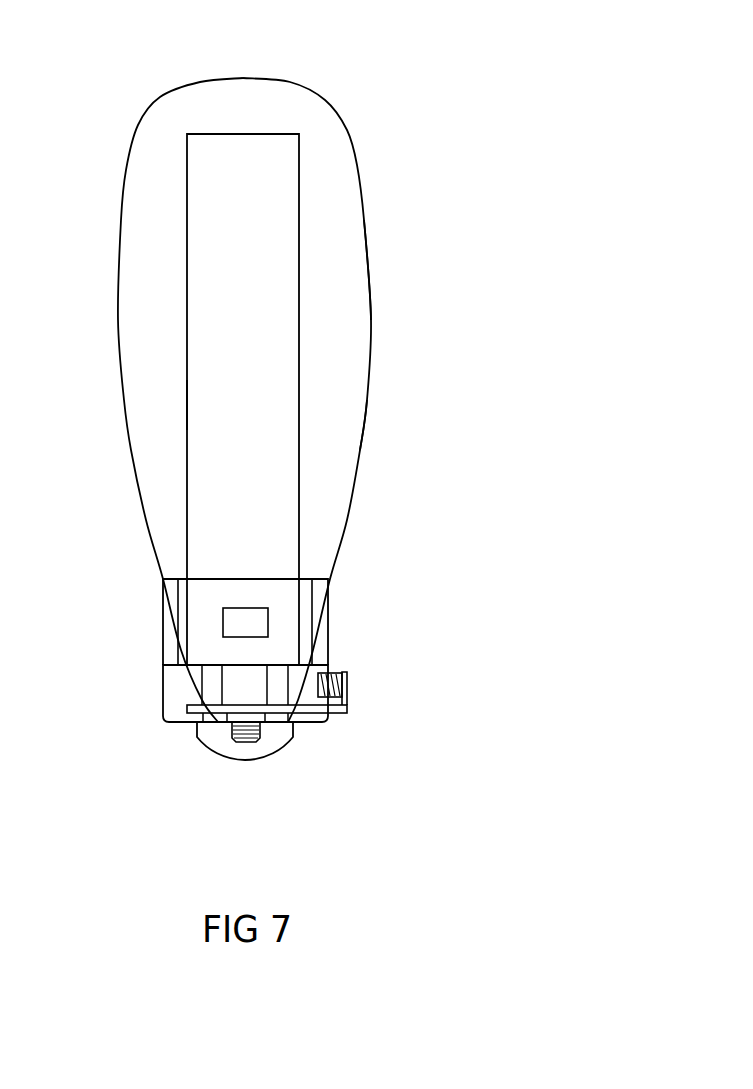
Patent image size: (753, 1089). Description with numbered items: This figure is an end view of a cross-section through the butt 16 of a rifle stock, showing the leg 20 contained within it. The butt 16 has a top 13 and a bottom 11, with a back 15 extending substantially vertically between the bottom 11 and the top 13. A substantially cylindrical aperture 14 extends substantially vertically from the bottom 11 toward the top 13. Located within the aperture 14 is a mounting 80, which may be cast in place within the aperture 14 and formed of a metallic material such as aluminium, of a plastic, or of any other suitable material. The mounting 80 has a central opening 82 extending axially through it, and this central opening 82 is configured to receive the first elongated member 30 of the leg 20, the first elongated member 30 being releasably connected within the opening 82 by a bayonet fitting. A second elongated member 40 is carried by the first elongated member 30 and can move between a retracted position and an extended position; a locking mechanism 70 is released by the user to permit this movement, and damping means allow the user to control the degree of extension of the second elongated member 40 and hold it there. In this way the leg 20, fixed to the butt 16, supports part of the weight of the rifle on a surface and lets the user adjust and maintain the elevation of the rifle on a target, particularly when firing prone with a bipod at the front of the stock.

The leg 20 is at (128, 750).
The top 13 is at (308, 97).
The aperture 14 is at (298, 200).
The butt 16 is at (342, 277).
The back 15 is at (340, 408).
The first elongated member 30 is at (187, 402).
The mounting 80 is at (287, 597).
The central opening 82 is at (193, 622).
The second elongated member 40 is at (235, 684).
The locking mechanism 70 is at (328, 722).
The bottom 11 is at (230, 722).